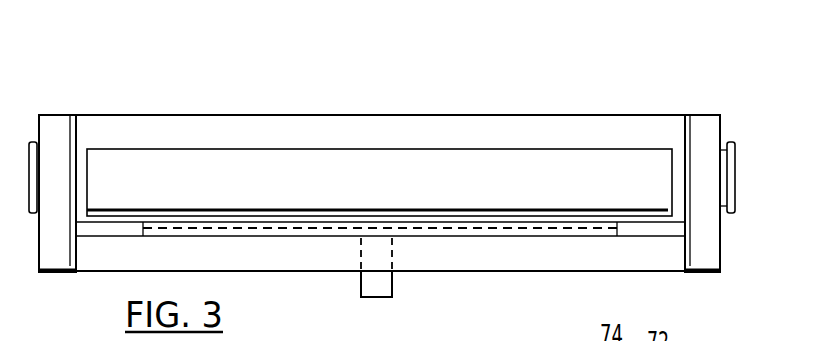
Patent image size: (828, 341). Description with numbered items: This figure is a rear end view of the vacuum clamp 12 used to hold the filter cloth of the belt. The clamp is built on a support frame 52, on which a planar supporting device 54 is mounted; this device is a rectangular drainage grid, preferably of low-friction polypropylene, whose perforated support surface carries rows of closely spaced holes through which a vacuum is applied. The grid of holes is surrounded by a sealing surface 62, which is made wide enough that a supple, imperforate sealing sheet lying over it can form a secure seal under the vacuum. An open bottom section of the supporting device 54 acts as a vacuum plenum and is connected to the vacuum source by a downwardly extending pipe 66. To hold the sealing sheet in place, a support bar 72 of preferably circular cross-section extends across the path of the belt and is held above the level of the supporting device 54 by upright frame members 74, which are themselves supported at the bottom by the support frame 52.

The vacuum clamp 12 is at (492, 84).
The upright frame member 74 is at (57, 125).
The support bar 72 is at (736, 160).
The sealing surface 62 is at (656, 212).
The support frame 52 is at (690, 249).
The planar supporting device 54 is at (568, 238).
The pipe 66 is at (392, 288).